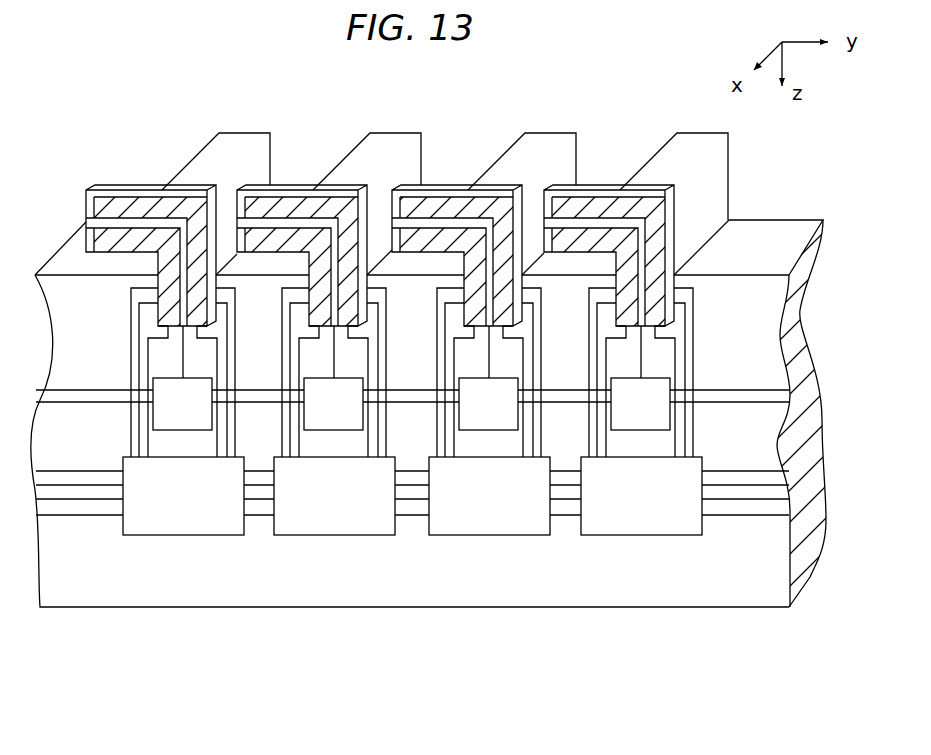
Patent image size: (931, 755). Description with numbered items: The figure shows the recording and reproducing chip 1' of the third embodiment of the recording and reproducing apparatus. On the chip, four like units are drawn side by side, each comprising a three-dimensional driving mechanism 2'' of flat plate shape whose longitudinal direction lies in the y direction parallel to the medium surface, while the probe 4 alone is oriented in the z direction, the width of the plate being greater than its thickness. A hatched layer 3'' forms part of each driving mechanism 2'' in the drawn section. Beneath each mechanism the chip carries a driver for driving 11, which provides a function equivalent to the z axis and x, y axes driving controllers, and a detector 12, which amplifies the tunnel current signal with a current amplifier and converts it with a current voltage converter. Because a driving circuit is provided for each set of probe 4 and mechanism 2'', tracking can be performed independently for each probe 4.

The recording and reproducing chip 1' is at (446, 397).
The three-dimensional driving mechanism 2'' is at (412, 172).
The conductive layer (hatched) 3'' is at (375, 214).
The probe 4 is at (87, 197).
The driver for driving 11 is at (185, 527).
The detector 12 is at (173, 420).